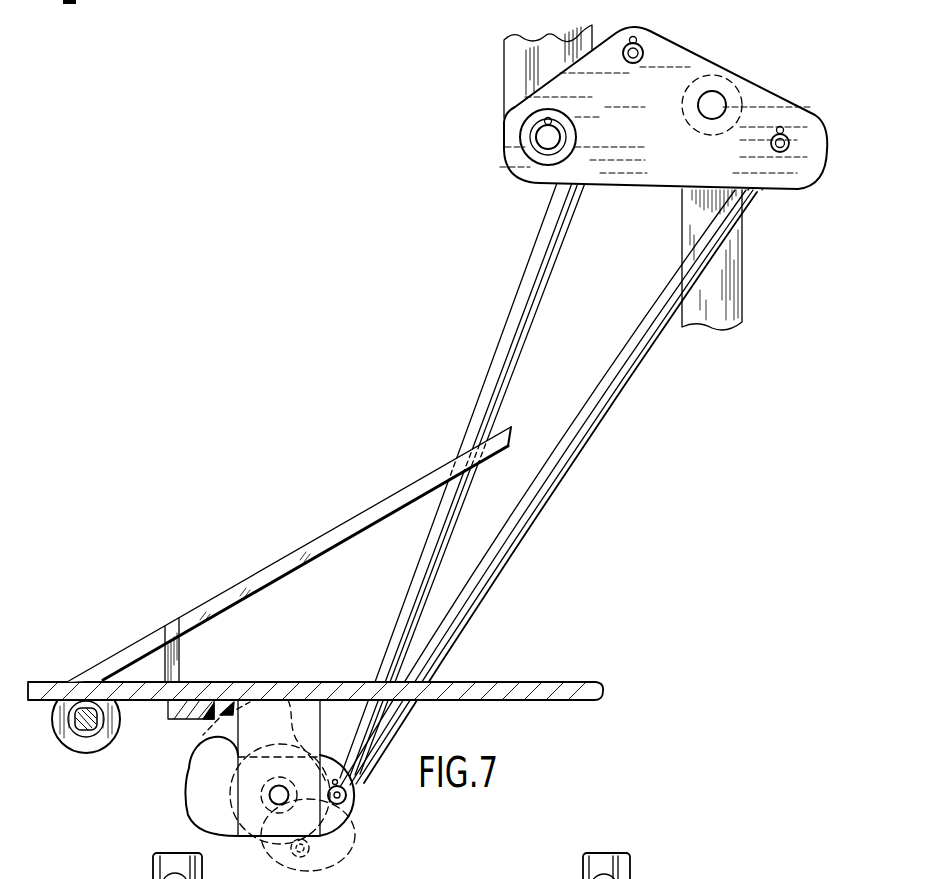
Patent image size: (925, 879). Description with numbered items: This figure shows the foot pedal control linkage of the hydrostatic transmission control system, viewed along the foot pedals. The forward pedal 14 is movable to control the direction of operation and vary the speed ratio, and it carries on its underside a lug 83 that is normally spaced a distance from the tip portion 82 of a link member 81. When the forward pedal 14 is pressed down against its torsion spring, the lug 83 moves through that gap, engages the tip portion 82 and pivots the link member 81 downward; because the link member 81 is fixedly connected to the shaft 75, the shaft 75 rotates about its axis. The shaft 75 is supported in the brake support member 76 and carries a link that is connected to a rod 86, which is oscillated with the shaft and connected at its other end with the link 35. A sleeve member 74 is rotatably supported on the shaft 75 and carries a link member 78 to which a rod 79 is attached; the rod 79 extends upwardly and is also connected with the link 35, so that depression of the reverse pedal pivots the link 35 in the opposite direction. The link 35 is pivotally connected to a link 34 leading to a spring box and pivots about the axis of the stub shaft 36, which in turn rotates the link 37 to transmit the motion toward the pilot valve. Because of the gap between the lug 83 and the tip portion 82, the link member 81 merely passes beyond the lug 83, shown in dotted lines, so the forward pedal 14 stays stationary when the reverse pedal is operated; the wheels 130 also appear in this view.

The forward pedal 14 is at (313, 540).
The link 34 is at (504, 66).
The link 35 is at (673, 44).
The stub shaft 36 is at (714, 103).
The link 37 is at (682, 212).
The sleeve member 74 is at (234, 804).
The shaft 75 is at (280, 785).
The brake support member 76 is at (320, 713).
The link member 78 is at (363, 794).
The rod 79 is at (492, 358).
The link member 81 is at (252, 848).
The tip portion 82 is at (287, 682).
The lug 83 is at (228, 704).
The rod 86 is at (619, 362).
The wheel 130 is at (581, 877).